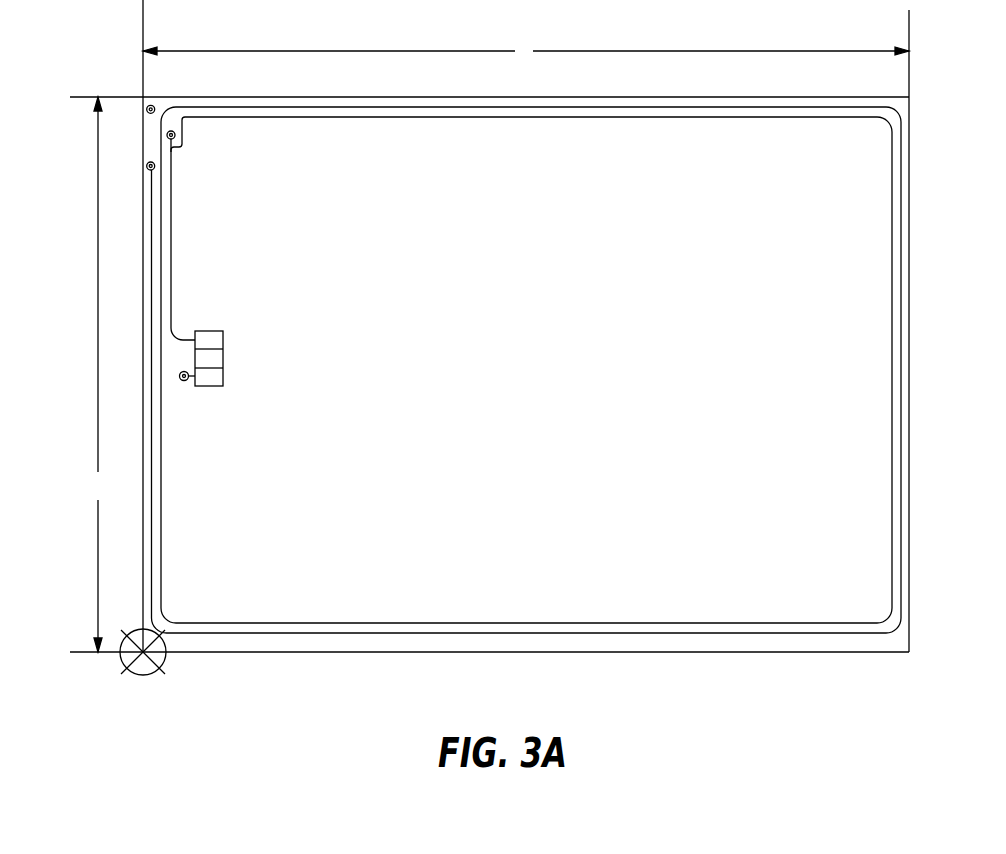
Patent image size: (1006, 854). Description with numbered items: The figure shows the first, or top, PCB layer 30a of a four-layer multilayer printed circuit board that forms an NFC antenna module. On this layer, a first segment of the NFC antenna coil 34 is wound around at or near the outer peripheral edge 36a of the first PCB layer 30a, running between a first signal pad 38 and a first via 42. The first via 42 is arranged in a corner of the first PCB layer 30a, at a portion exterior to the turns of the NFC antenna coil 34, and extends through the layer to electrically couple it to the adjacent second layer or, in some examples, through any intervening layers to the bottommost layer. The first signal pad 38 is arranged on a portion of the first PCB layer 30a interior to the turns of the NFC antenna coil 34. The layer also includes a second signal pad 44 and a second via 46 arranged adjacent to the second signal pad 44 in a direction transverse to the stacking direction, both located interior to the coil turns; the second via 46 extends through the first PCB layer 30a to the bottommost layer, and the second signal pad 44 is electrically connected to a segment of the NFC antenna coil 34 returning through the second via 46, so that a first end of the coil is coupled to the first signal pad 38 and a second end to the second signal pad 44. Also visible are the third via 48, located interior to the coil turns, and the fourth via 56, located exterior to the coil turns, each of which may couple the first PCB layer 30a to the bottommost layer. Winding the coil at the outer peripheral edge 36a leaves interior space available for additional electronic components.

The first PCB layer 30a is at (852, 97).
The outer peripheral edge 36a is at (298, 97).
The NFC antenna coil 34 is at (906, 205).
The fourth via 56 is at (147, 106).
The first via 42 is at (146, 166).
The third via 48 is at (171, 131).
The first signal pad 38 is at (210, 331).
The second via 46 is at (179, 376).
The second signal pad 44 is at (210, 387).